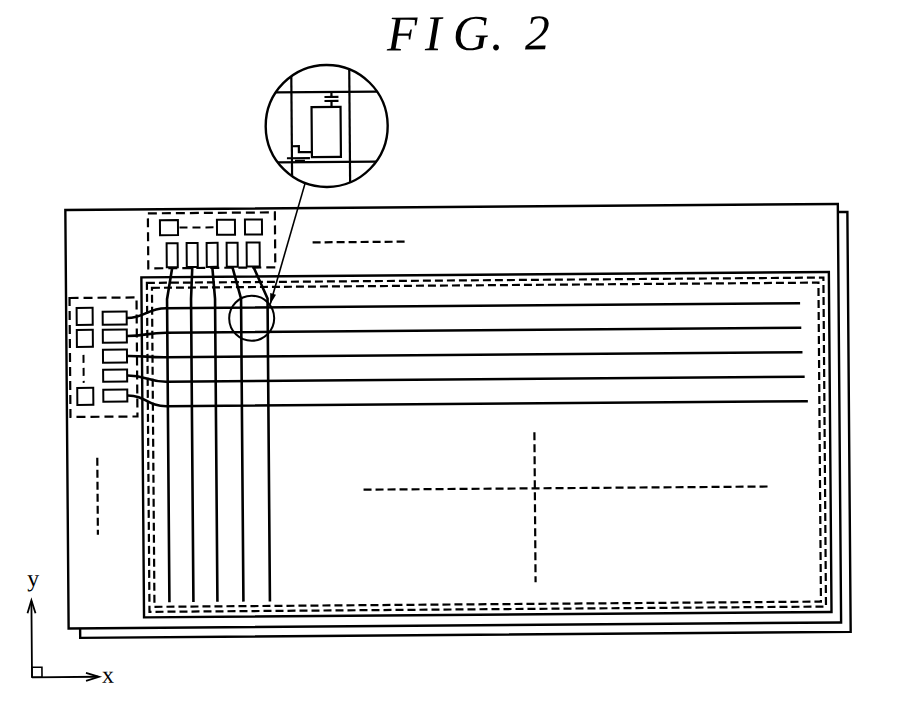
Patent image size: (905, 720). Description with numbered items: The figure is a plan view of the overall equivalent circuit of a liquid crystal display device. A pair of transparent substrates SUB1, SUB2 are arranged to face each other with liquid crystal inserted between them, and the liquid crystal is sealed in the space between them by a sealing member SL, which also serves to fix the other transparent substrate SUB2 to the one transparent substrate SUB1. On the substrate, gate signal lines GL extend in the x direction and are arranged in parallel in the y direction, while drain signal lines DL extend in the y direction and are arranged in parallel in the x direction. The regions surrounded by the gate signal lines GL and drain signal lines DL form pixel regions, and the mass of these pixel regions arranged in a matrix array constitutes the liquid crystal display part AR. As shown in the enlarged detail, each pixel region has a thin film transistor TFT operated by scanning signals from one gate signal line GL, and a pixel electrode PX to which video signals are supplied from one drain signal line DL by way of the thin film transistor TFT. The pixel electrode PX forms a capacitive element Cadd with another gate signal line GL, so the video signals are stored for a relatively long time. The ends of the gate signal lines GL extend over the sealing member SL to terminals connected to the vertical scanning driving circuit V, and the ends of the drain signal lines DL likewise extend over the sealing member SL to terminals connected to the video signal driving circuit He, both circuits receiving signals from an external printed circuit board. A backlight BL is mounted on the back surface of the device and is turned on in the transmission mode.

The transparent substrate SUB1 is at (489, 206).
The transparent substrate SUB2 is at (612, 279).
The backlight BL is at (752, 636).
The sealing member SL is at (427, 615).
The liquid crystal display part AR is at (607, 568).
The video signal driving circuit He is at (151, 230).
The vertical scanning driving circuit V is at (87, 415).
The gate signal line GL is at (741, 405).
The drain signal line DL is at (268, 576).
The pixel electrode PX is at (344, 129).
The capacitive element Cadd is at (343, 99).
The thin film transistor TFT is at (294, 155).